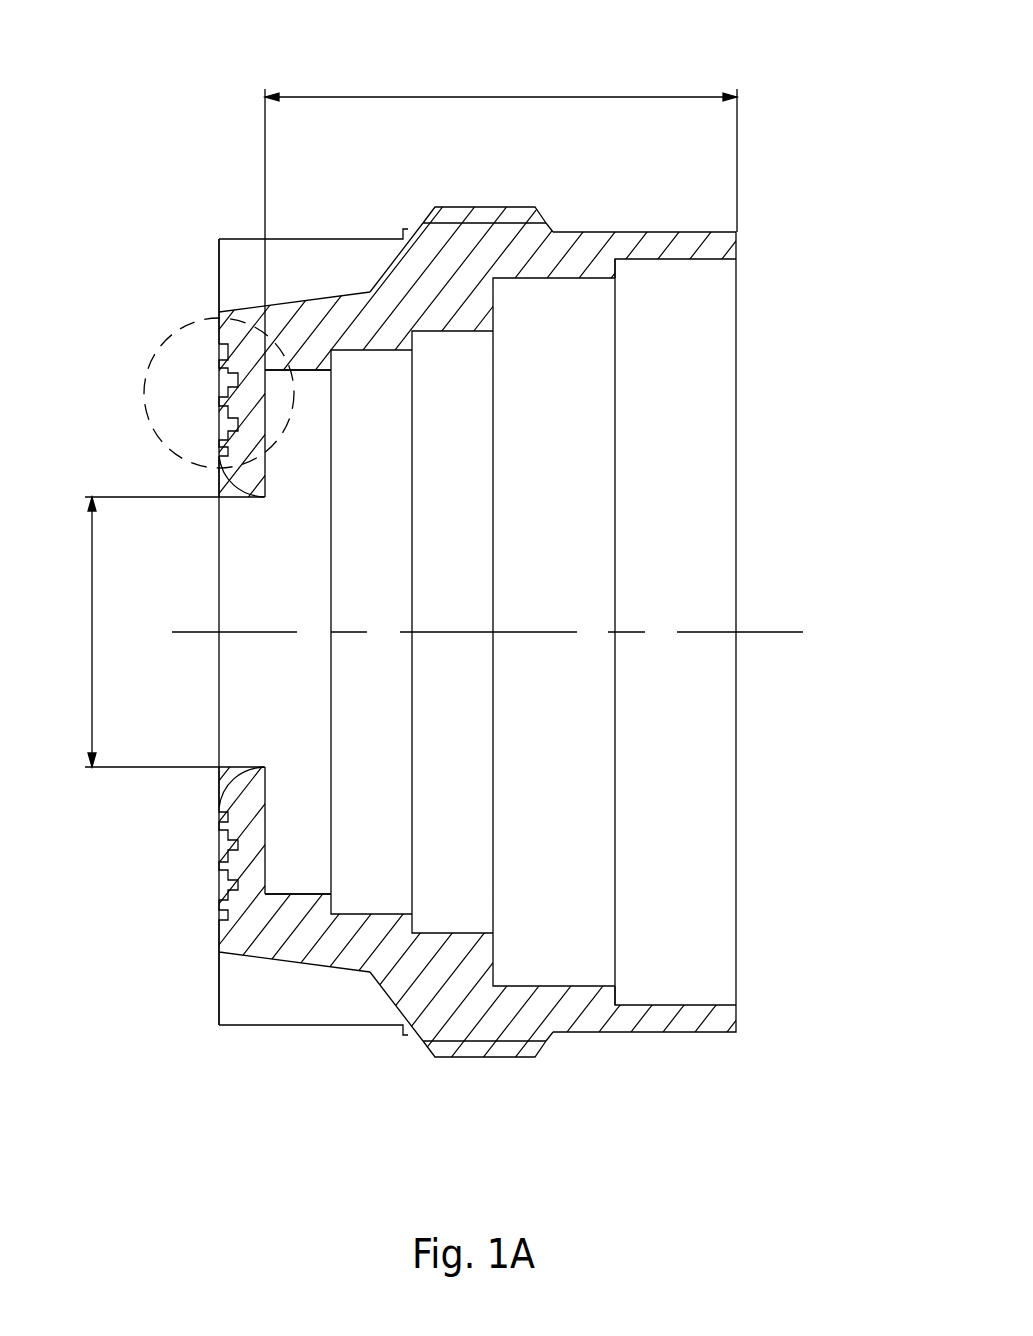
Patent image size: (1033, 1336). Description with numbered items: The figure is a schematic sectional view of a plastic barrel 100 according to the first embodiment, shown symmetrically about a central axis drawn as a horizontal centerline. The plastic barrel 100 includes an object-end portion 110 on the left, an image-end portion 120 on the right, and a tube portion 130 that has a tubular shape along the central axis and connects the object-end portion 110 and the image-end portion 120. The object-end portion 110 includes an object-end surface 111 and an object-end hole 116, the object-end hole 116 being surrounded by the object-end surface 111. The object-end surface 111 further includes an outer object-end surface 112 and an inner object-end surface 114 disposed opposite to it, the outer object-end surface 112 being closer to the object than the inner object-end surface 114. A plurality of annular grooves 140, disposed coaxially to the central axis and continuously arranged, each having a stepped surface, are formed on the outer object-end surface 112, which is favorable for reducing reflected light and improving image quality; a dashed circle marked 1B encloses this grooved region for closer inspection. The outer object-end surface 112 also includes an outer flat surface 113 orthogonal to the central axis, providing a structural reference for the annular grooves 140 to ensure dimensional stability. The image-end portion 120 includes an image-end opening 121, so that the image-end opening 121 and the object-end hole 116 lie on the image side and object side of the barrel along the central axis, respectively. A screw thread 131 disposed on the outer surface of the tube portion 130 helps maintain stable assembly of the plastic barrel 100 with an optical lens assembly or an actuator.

The plastic barrel 100 is at (162, 31).
The object-end portion 110 is at (219, 341).
The object-end surface 111 is at (219, 457).
The outer object-end surface 112 is at (219, 808).
The outer flat surface 113 is at (219, 925).
The inner object-end surface 114 is at (293, 393).
The object-end hole 116 is at (230, 698).
The image-end portion 120 is at (737, 248).
The image-end opening 121 is at (722, 470).
The tube portion 130 is at (630, 232).
The screw thread 131 is at (485, 207).
The annular grooves 140 is at (239, 379).
The detail region of FIG. 1B is at (132, 405).